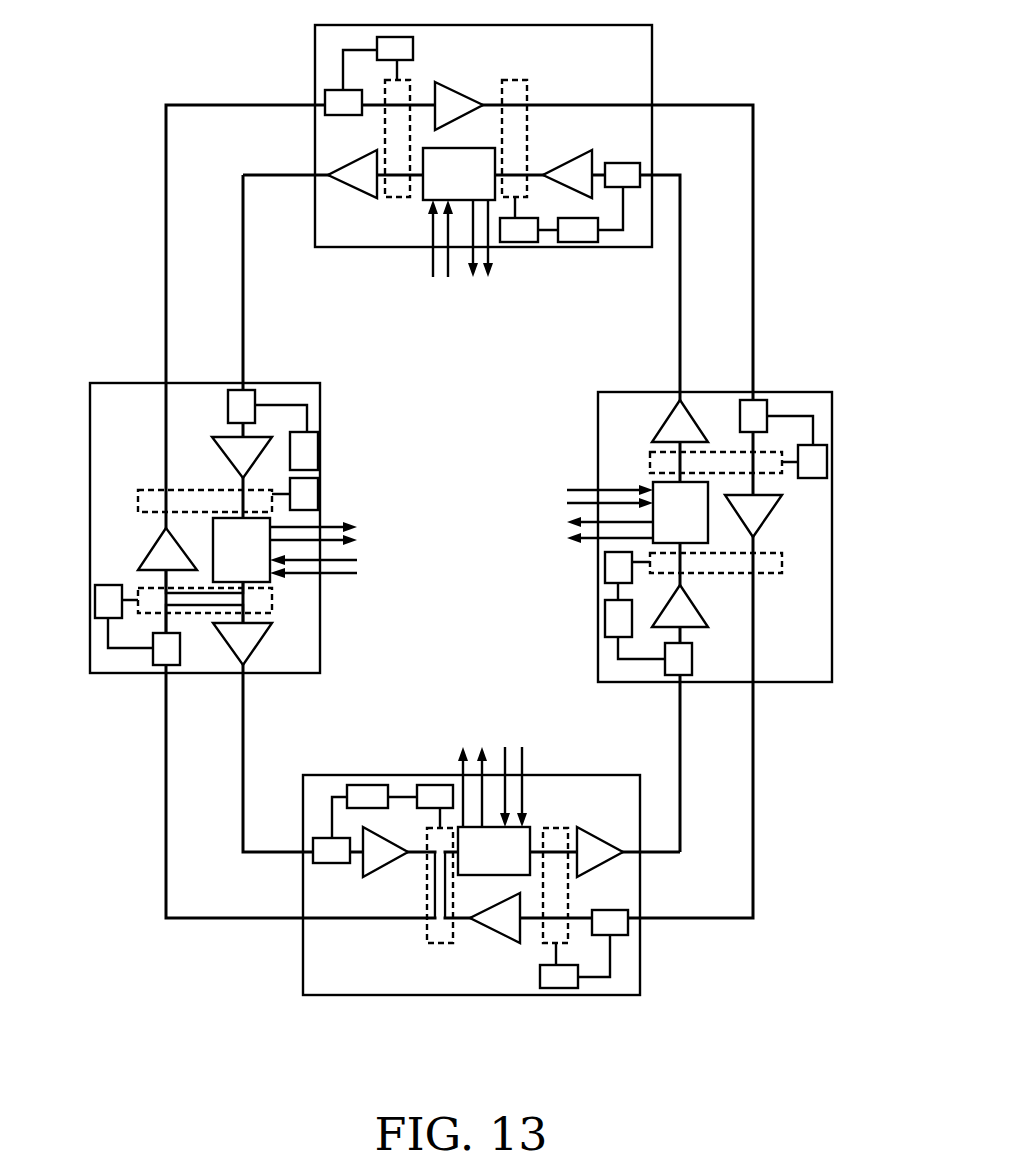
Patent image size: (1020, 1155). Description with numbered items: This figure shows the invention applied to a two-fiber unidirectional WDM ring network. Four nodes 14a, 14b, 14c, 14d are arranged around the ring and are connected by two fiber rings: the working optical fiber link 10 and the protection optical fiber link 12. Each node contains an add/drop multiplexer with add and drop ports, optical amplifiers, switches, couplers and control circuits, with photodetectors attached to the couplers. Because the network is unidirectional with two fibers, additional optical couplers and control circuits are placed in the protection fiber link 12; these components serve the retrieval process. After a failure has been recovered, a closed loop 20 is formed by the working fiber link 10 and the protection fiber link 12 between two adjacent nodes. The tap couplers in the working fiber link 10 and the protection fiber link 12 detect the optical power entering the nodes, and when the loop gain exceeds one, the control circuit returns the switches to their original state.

The working optical fiber link 10 is at (680, 273).
The protection optical fiber link 12 is at (753, 185).
The node 14a is at (832, 603).
The node 14b is at (652, 73).
The node 14c is at (89, 610).
The node 14d is at (640, 965).
The closed loop 20 is at (243, 800).